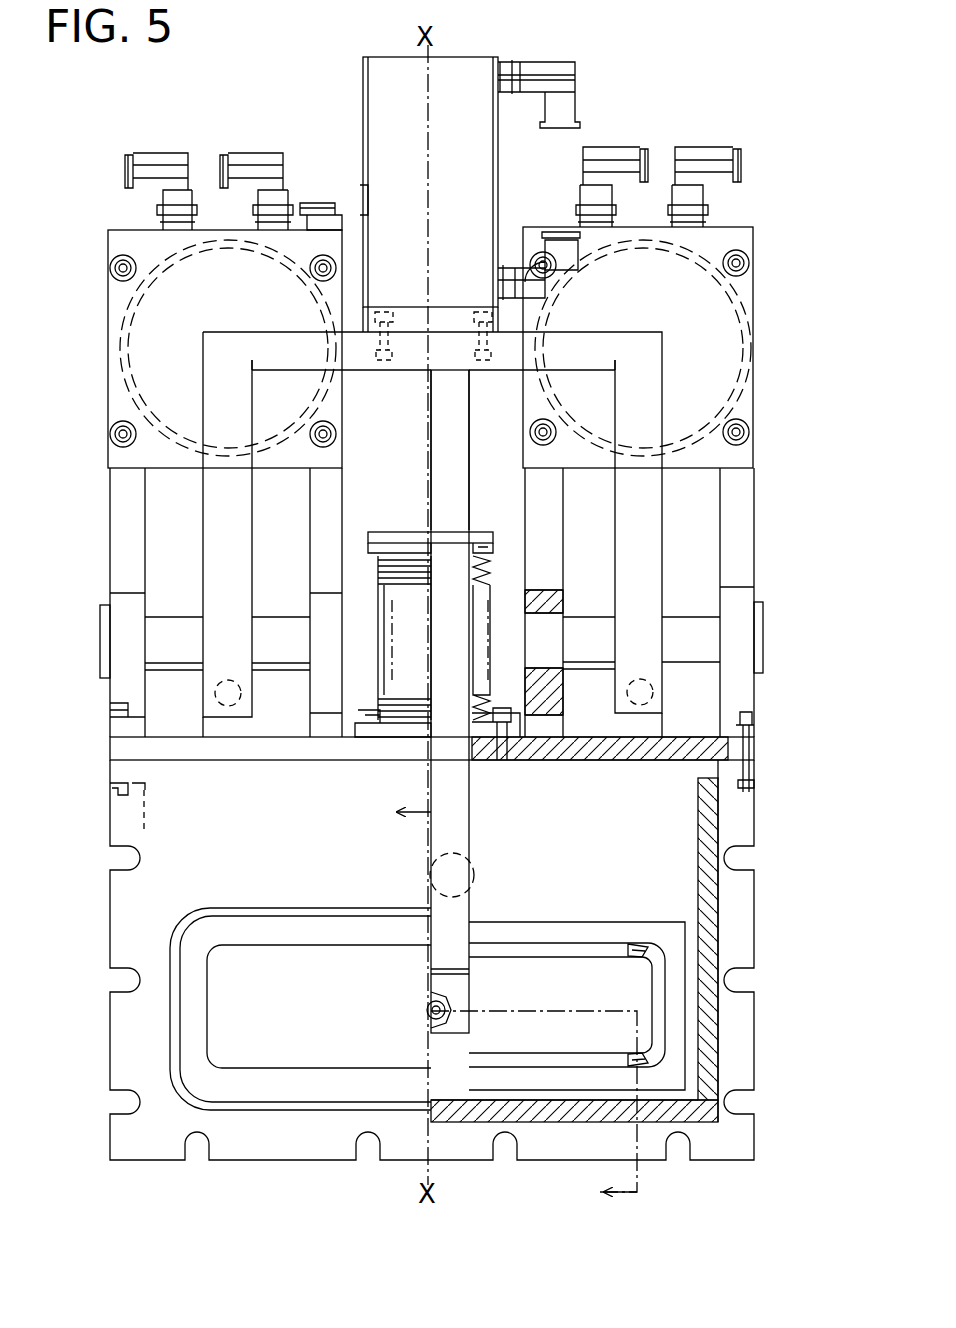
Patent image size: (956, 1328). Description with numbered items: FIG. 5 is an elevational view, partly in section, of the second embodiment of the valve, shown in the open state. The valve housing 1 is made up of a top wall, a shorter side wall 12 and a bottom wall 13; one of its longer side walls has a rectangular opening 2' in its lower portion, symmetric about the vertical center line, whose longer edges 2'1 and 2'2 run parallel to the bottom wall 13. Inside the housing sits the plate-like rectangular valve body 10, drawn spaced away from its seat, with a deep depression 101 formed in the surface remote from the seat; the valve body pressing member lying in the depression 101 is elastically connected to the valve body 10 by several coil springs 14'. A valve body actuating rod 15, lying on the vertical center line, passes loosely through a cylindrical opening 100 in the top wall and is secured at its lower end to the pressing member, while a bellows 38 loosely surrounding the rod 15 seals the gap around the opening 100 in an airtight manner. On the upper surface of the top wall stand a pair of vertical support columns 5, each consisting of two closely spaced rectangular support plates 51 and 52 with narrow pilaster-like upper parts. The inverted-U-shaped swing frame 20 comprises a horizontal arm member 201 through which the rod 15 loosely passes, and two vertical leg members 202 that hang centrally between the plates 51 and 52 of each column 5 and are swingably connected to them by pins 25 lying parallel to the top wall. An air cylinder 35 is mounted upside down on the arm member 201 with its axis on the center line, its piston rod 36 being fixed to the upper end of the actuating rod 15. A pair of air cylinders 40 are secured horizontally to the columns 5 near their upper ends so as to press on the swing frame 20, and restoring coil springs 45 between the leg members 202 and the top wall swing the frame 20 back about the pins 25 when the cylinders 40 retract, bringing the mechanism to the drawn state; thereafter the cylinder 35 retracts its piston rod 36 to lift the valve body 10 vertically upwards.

The valve housing 1 is at (776, 880).
The valve body 10 is at (606, 745).
The shorter side wall 12 is at (712, 912).
The bottom wall 13 is at (592, 1122).
The coil springs 14' is at (729, 1011).
The valve body actuating rod 15 is at (452, 825).
The depression 101 is at (588, 945).
The rectangular opening 2' is at (300, 1010).
The longer edge of opening 2'1 is at (305, 1040).
The longer edge of opening 2'2 is at (300, 983).
The air cylinder 35 is at (478, 172).
The piston rod 36 is at (440, 416).
The bellows 38 is at (372, 575).
The air cylinders 40 is at (107, 330).
The swing frame 20 is at (294, 318).
The horizontal arm member 201 is at (277, 348).
The vertical leg members 202 is at (640, 532).
The restoring coil springs 45 is at (240, 697).
The vertical support columns 5 is at (180, 566).
The support plate 51 is at (543, 502).
The support plate 52 is at (125, 547).
The pins 25 is at (100, 642).
The cylindrical opening 100 is at (483, 755).